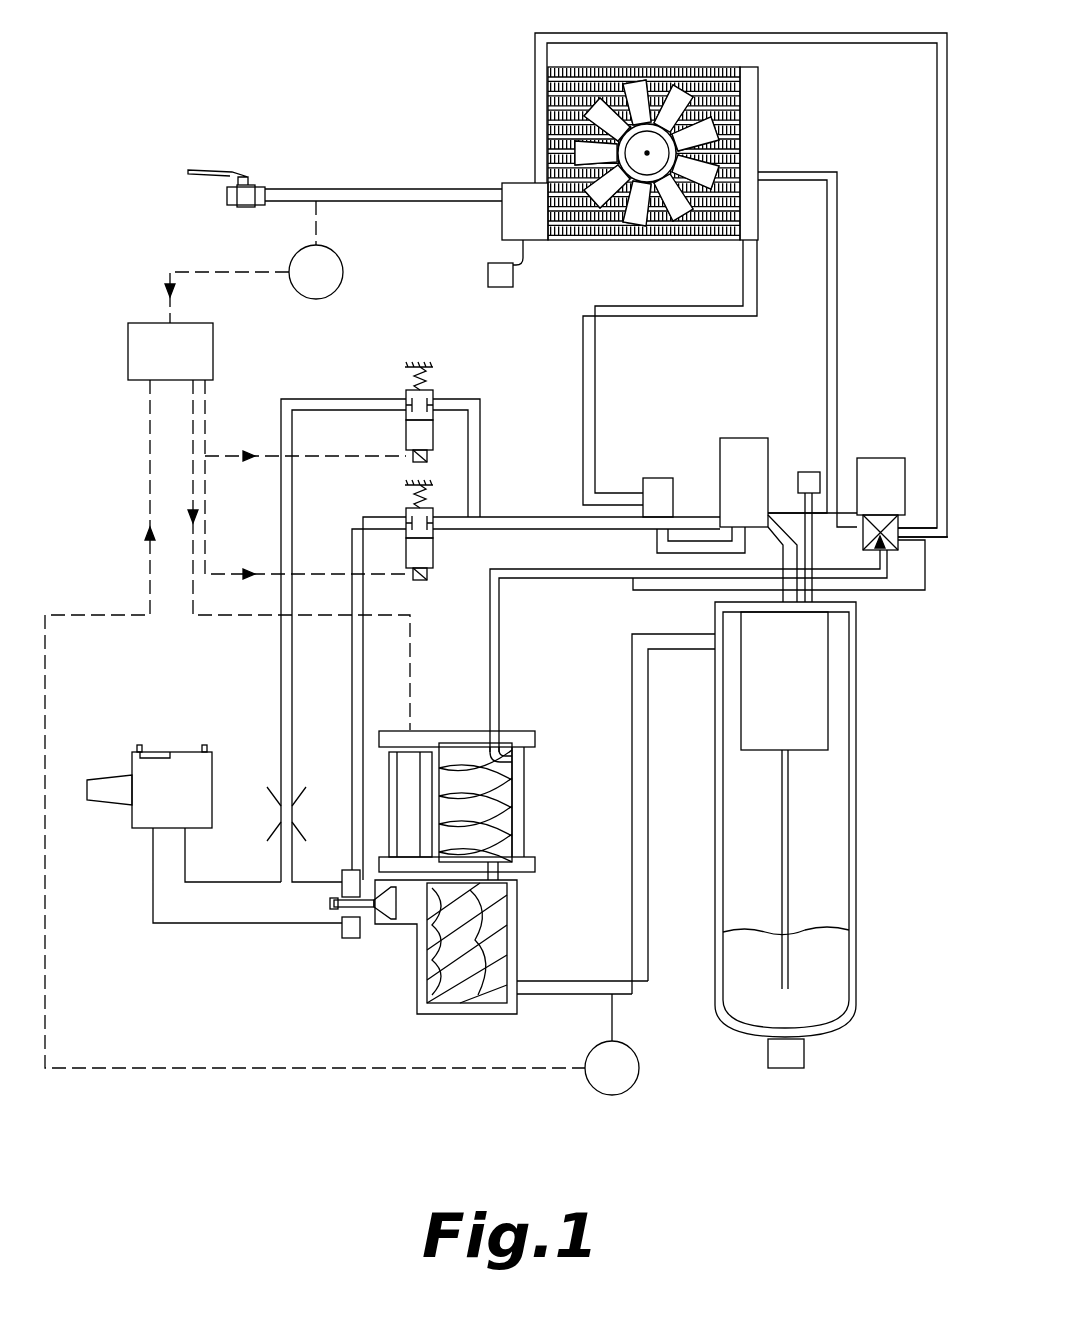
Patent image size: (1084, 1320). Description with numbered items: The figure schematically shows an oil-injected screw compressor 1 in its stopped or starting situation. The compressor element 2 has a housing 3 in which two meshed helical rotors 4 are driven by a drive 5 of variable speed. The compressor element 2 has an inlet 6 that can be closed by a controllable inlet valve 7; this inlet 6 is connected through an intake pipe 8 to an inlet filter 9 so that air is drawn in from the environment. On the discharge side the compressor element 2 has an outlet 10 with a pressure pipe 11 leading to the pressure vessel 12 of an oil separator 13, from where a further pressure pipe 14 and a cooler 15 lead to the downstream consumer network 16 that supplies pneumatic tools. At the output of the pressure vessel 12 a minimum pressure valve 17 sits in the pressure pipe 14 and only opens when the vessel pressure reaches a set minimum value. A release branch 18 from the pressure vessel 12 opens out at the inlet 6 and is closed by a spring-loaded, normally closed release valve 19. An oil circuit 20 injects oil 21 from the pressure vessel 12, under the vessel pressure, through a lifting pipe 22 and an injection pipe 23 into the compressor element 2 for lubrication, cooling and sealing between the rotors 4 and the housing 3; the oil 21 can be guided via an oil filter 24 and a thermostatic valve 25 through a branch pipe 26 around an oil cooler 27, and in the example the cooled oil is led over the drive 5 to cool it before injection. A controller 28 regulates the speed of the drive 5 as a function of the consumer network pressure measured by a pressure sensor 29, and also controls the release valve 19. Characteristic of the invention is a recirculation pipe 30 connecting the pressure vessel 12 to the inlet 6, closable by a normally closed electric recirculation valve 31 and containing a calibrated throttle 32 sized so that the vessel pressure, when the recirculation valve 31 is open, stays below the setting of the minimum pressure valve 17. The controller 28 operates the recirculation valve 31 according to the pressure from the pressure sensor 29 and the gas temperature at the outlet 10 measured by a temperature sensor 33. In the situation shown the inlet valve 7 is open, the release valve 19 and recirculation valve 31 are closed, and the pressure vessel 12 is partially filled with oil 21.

The oil-injected screw compressor 1 is at (147, 103).
The compressor element 2 is at (462, 1020).
The housing 3 is at (418, 975).
The helical rotors 4 is at (498, 918).
The drive 5 is at (500, 790).
The inlet 6 is at (342, 922).
The inlet valve 7 is at (368, 907).
The intake pipe 8 is at (200, 925).
The inlet filter 9 is at (153, 815).
The outlet 10 is at (516, 975).
The pressure pipe 11 is at (642, 868).
The pressure vessel 12 is at (855, 830).
The oil separator 13 is at (863, 762).
The pressure pipe 14 is at (592, 373).
The cooler 15 is at (590, 227).
The consumer network 16 is at (362, 193).
The minimum pressure valve 17 is at (653, 478).
The release branch 18 is at (522, 525).
The release valve 19 is at (433, 555).
The oil circuit 20 is at (930, 592).
The oil 21 is at (814, 1013).
The lifting pipe 22 is at (786, 905).
The injection pipe 23 is at (573, 577).
The oil filter 24 is at (888, 458).
The thermostatic valve 25 is at (887, 552).
The branch pipe 26 is at (848, 340).
The oil cooler 27 is at (750, 103).
The controller 28 is at (152, 348).
The pressure sensor 29 is at (340, 265).
The recirculation pipe 30 is at (287, 490).
The recirculation valve 31 is at (435, 390).
The calibrated throttle 32 is at (268, 812).
The temperature sensor 33 is at (628, 1085).